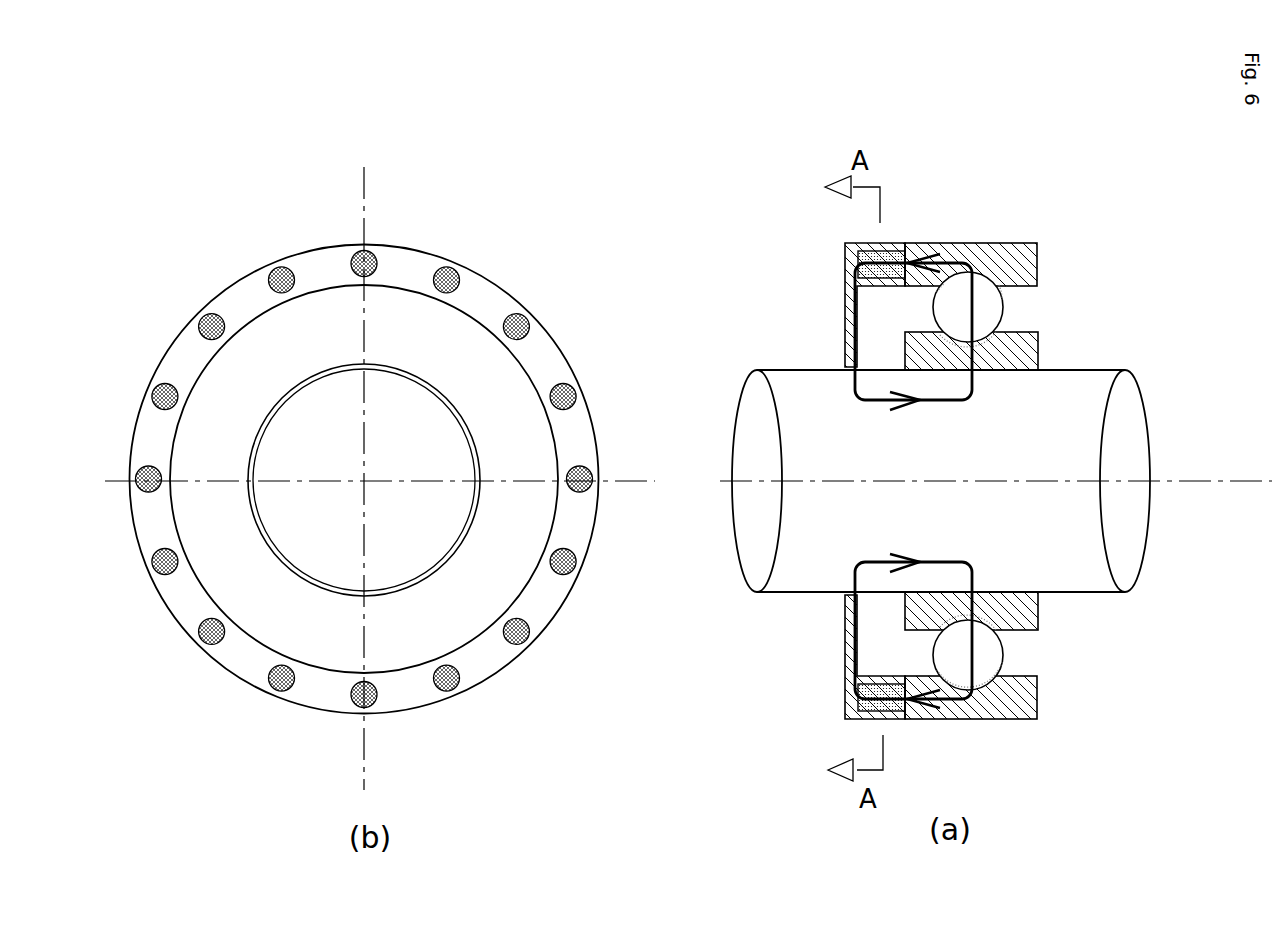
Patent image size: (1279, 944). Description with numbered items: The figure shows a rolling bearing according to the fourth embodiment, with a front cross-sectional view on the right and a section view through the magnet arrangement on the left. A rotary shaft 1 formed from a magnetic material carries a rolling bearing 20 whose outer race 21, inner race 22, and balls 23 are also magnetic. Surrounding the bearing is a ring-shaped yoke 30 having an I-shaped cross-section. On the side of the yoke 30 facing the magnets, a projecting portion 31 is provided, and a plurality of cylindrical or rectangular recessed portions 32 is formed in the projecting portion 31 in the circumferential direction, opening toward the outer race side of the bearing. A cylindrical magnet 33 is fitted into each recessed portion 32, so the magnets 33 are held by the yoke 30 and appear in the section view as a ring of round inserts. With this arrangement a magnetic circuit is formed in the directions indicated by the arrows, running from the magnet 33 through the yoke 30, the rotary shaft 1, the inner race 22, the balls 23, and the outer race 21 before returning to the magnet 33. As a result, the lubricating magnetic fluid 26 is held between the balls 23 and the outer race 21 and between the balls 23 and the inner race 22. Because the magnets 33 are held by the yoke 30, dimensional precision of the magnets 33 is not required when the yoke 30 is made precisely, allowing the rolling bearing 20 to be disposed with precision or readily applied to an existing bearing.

The rotary shaft 1 is at (343, 458).
The rolling bearing 20 is at (877, 118).
The outer race 21 is at (993, 243).
The inner race 22 is at (1040, 353).
The balls 23 is at (1003, 307).
The lubricating magnetic fluid 26 is at (990, 282).
The ring-shaped yoke 30 is at (447, 347).
The projecting portion 31 is at (397, 254).
The recessed portions 32 is at (296, 282).
The magnet 33 is at (162, 400).